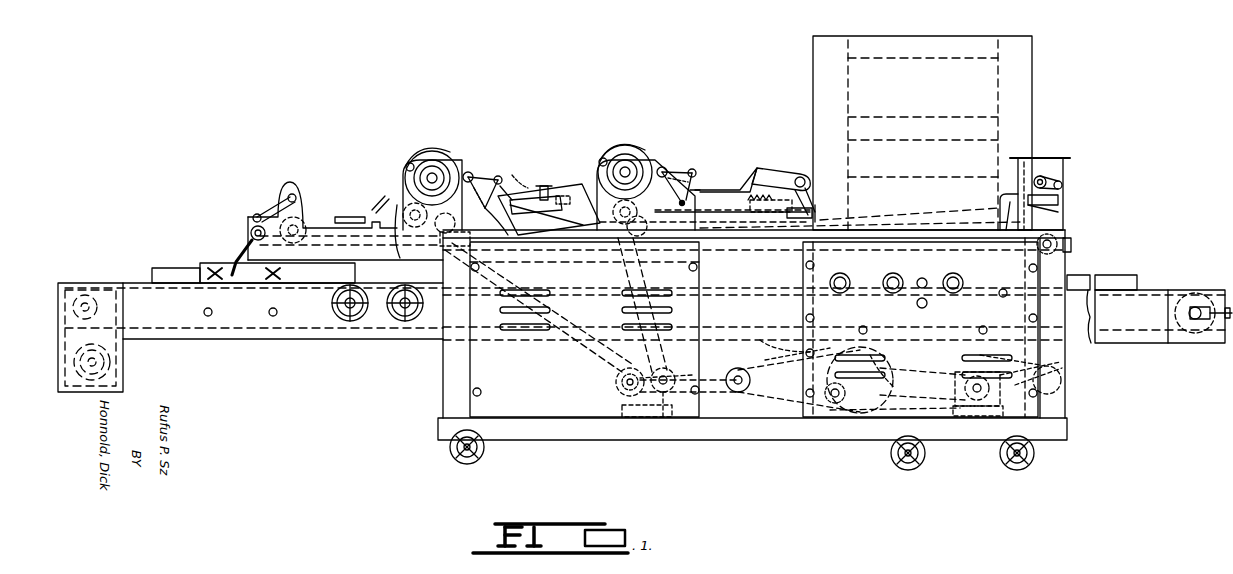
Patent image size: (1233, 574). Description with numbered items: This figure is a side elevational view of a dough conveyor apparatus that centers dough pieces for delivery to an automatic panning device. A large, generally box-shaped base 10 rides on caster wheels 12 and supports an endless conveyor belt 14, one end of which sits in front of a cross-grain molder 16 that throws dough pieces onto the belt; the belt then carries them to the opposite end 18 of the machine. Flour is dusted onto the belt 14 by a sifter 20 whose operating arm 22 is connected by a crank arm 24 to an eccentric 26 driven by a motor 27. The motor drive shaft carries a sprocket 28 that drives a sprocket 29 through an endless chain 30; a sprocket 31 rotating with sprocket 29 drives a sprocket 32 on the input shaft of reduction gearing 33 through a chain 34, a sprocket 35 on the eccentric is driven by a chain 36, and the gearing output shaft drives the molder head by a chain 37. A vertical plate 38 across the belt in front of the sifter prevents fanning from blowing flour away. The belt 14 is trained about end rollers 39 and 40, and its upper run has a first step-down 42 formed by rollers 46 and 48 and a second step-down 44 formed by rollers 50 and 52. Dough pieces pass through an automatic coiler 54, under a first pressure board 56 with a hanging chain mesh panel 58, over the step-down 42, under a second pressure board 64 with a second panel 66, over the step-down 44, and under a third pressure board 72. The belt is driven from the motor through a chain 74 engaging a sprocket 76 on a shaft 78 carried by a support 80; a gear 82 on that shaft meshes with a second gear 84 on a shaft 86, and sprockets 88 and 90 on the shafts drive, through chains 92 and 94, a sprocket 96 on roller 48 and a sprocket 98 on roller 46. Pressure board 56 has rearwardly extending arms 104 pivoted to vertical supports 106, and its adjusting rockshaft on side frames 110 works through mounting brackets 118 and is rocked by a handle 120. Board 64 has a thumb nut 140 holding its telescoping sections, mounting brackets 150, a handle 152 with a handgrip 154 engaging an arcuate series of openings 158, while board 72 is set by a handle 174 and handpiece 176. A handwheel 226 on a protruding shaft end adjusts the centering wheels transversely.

The base 10 is at (1063, 265).
The caster wheels 12 is at (486, 450).
The endless conveyor belt 14 is at (888, 205).
The cross-grain molder 16 is at (1030, 98).
The opposite end 18 is at (160, 238).
The sifter 20 is at (1068, 165).
The operating arm 22 is at (1062, 186).
The crank arm 24 is at (1064, 212).
The eccentric 26 is at (1070, 380).
The motor 27 is at (760, 340).
The sprocket 28 is at (797, 353).
The sprocket 29 is at (880, 352).
The endless chain 30 is at (830, 352).
The sprocket 31 is at (885, 358).
The sprocket 32 is at (960, 402).
The reduction gearing 33 is at (985, 352).
The endless chain 34 is at (905, 366).
The sprocket 35 is at (1068, 362).
The endless chain 36 is at (1045, 352).
The endless chain 37 is at (1068, 250).
The vertical plate 38 is at (992, 205).
The roller 39 is at (1058, 240).
The roller 40 is at (268, 195).
The first step-down 42 is at (592, 190).
The second step-down 44 is at (378, 196).
The roller 46 is at (630, 212).
The roller 48 is at (650, 226).
The roller 50 is at (402, 190).
The roller 52 is at (468, 232).
The automatic coiler 54 is at (828, 196).
The first pressure board 56 is at (716, 186).
The chain mesh panel 58 is at (696, 162).
The second pressure board 64 is at (545, 195).
The second chain mesh panel 66 is at (505, 185).
The third pressure board 72 is at (312, 210).
The chain 74 is at (690, 372).
The sprocket 76 is at (726, 380).
The shaft 78 is at (668, 392).
The support 80 is at (620, 400).
The gear 82 is at (733, 391).
The second gear 84 is at (615, 385).
The shaft 86 is at (610, 375).
The sprocket 88 is at (655, 418).
The sprocket 90 is at (600, 362).
The chain 92 is at (652, 278).
The chain 94 is at (490, 276).
The sprocket 96 is at (688, 212).
The sprocket 98 is at (372, 200).
The rearwardly extending arms 104 is at (785, 172).
The vertical supports 106 is at (810, 176).
The side frames 110 is at (463, 168).
The mounting brackets 118 is at (682, 168).
The handle 120 is at (700, 176).
The thumb nut 140 is at (550, 190).
The mounting brackets 150 is at (520, 170).
The handle 152 is at (486, 185).
The handgrip 154 is at (508, 226).
The arcuate series of openings 158 is at (528, 180).
The handle 174 is at (252, 214).
The handpiece 176 is at (272, 184).
The handwheel 226 is at (436, 152).